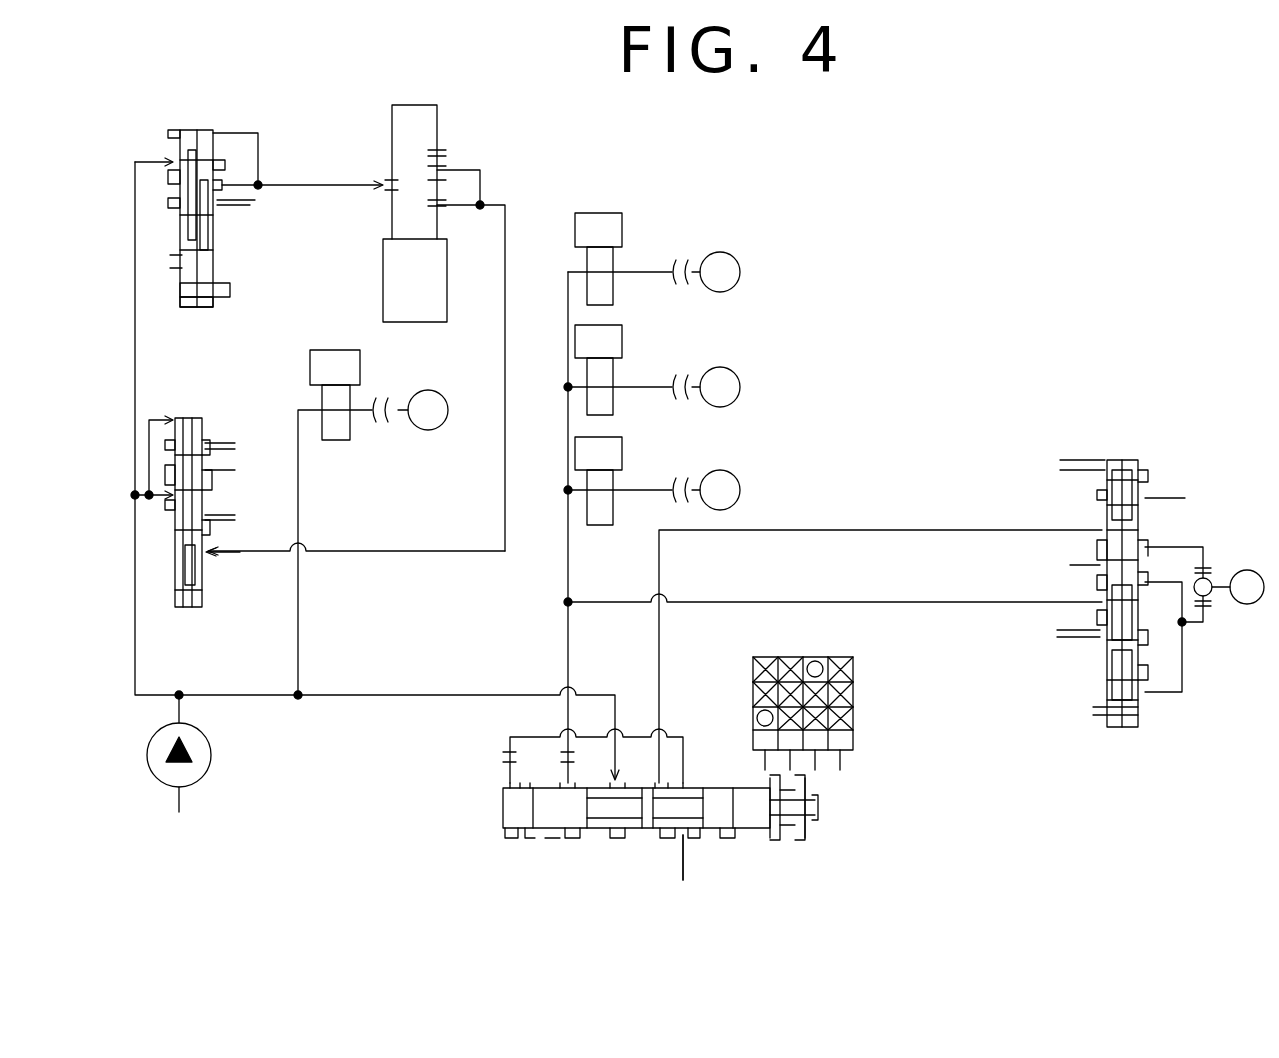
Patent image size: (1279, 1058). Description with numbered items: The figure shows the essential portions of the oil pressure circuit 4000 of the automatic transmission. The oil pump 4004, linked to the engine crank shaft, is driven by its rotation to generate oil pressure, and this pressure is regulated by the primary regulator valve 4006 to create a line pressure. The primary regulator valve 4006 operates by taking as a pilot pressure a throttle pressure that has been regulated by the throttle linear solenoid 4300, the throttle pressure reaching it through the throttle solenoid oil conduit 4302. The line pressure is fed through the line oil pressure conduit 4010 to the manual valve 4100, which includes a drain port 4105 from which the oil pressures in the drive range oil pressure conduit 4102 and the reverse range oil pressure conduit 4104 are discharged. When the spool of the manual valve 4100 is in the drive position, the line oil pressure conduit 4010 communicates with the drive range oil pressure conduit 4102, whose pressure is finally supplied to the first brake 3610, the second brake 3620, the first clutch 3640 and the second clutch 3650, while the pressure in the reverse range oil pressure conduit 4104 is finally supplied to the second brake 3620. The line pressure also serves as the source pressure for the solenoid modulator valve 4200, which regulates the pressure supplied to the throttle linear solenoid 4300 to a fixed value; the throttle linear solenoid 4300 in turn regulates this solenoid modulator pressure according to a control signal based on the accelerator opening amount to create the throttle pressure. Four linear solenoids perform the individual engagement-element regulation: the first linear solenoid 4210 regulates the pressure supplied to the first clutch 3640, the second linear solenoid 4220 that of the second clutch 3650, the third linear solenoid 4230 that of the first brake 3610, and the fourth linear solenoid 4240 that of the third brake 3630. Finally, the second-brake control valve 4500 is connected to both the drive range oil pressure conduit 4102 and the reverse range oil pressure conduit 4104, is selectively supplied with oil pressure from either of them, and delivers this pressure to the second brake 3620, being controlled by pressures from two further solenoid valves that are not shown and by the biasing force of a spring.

The oil pressure circuit 4000 is at (758, 147).
The oil pump 4004 is at (206, 742).
The primary regulator valve 4006 is at (185, 608).
The line oil pressure conduit 4010 is at (205, 695).
The manual valve 4100 is at (490, 814).
The D range oil pressure conduit 4102 is at (568, 660).
The R range oil pressure conduit 4104 is at (659, 655).
The drain port 4105 is at (690, 846).
The solenoid modulator valve 4200 is at (186, 318).
The linear solenoid SL1 4210 is at (650, 240).
The linear solenoid SL2 4220 is at (650, 354).
The linear solenoid SL3 4230 is at (622, 462).
The linear solenoid SL4 4240 is at (330, 350).
The linear solenoid SLT 4300 is at (383, 258).
The SLT oil conduit 4302 is at (455, 553).
The control valve B2 4500 is at (1162, 468).
The brake B1 3610 is at (720, 472).
The brake B2 3620 is at (1247, 606).
The brake B3 3630 is at (427, 390).
The clutch C1 3640 is at (720, 252).
The clutch C2 3650 is at (720, 366).